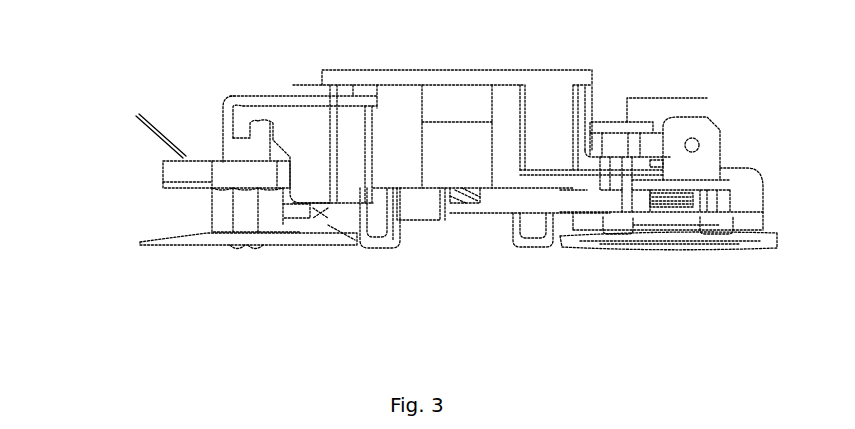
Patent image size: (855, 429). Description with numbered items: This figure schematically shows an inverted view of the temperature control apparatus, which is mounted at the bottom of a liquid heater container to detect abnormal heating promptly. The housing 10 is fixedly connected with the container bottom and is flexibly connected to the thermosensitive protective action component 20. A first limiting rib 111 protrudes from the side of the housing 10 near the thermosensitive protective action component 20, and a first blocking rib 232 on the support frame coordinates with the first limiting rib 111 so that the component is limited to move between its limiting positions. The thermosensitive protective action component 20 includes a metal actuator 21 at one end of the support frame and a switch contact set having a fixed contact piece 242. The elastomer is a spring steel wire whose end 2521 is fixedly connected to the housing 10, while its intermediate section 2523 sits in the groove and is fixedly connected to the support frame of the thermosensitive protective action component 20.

The housing 10 is at (460, 108).
The first limiting rib 111 is at (358, 203).
The first blocking rib 232 is at (328, 205).
The thermosensitive protective action component 20 is at (222, 148).
The end of the spring steel wire 2521 is at (225, 170).
The intermediate section of the spring steel wire 2523 is at (248, 94).
The fixed contact piece 242 is at (142, 130).
The metal actuator 21 is at (192, 242).